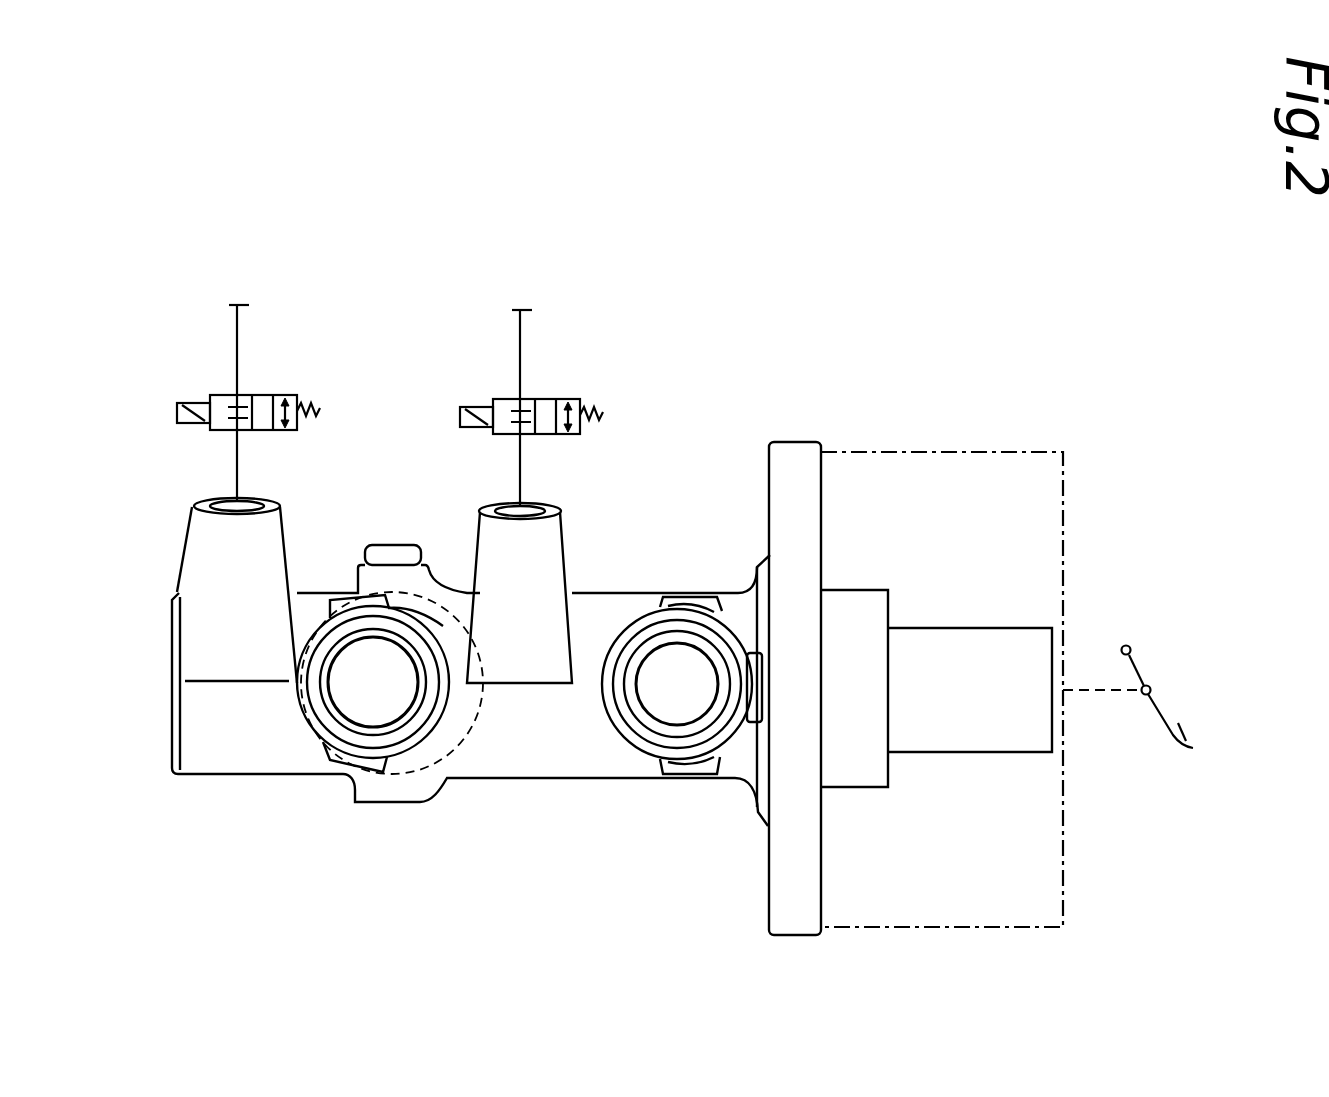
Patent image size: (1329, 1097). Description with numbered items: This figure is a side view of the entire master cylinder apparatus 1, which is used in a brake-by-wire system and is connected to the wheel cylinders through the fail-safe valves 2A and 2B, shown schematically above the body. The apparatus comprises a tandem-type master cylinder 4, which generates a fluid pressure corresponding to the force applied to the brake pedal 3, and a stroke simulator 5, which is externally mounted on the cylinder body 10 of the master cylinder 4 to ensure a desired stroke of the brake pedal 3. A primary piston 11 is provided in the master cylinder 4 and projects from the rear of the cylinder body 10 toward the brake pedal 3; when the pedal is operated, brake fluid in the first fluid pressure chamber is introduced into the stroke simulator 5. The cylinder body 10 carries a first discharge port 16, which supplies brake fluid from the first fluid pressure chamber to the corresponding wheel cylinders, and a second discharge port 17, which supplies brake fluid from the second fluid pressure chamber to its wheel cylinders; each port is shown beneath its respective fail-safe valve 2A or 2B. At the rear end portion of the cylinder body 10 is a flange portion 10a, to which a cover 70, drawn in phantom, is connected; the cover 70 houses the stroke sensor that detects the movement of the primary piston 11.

The master cylinder apparatus 1 is at (821, 439).
The fail-safe valve 2A is at (568, 399).
The fail-safe valve 2B is at (222, 395).
The brake pedal 3 is at (1158, 710).
The tandem-type master cylinder 4 is at (232, 776).
The stroke simulator 5 is at (400, 776).
The cylinder body 10 is at (565, 752).
The flange portion 10a is at (783, 860).
The primary piston 11 is at (990, 640).
The first discharge port 16 is at (538, 506).
The second discharge port 17 is at (216, 503).
The cover 70 is at (945, 452).